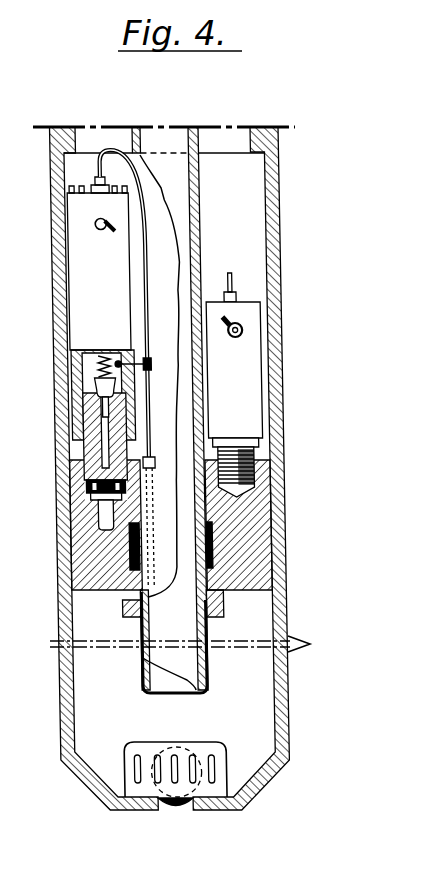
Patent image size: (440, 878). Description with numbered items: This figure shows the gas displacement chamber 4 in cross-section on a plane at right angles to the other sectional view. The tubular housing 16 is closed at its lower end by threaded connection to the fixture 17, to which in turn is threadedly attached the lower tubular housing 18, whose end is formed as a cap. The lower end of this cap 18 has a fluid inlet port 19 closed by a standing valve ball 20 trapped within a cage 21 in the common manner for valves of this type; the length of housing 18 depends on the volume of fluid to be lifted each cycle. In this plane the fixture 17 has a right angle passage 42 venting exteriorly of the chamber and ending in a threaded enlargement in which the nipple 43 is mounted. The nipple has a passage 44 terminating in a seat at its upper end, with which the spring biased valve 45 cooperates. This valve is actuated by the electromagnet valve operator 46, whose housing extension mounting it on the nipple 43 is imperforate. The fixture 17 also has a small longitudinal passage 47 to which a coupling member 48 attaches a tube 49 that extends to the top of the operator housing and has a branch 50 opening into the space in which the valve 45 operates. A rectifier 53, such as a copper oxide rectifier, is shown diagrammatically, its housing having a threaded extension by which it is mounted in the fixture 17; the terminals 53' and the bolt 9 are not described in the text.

The gas displacement chamber 4 is at (175, 484).
The securing bolt 9 is at (224, 321).
The tubular housing 16 is at (278, 233).
The fixture 17 is at (260, 522).
The tubular housing 18 is at (194, 640).
The fluid inlet port 19 is at (169, 810).
The standing valve ball 20 is at (190, 752).
The cage 21 is at (138, 747).
The right angle passage 42 is at (97, 515).
The nipple 43 is at (83, 445).
The passage 44 is at (85, 482).
The spring biased valve 45 is at (100, 397).
The electromagnet valve operator 46 is at (88, 307).
The small longitudinal passage 47 is at (165, 422).
The coupling member 48 is at (153, 456).
The tube 49 is at (141, 273).
The branch 50 is at (136, 360).
The electric current rectifier 53 is at (266, 399).
The battery terminal 53' is at (168, 261).